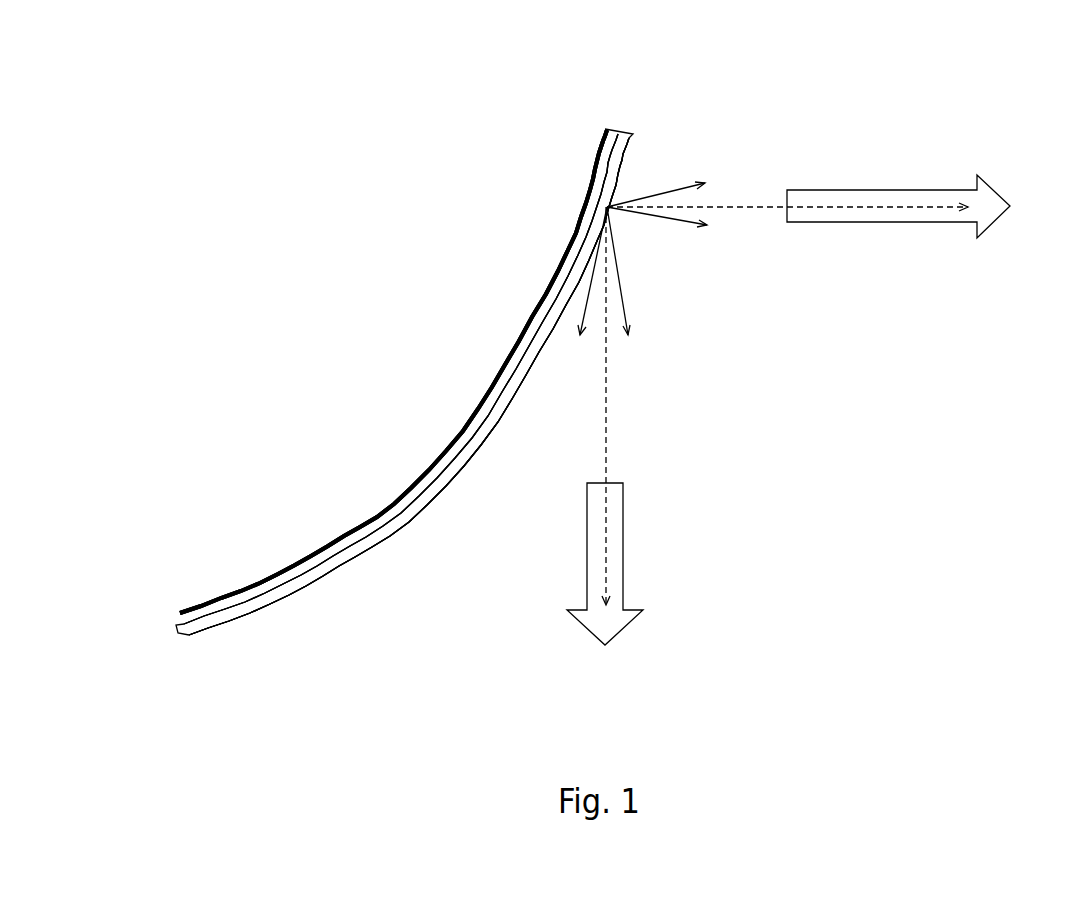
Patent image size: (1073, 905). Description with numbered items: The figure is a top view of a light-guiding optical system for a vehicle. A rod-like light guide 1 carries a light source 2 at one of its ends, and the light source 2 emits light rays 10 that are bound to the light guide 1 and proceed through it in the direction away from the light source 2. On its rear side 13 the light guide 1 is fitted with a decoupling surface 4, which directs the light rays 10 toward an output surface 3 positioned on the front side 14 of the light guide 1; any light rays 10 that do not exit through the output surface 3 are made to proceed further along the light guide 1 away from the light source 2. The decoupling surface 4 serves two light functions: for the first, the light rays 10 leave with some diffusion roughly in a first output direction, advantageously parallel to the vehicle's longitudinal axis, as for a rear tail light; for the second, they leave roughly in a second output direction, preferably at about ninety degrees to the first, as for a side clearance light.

The light guide 1 is at (512, 340).
The light source 2 is at (625, 127).
The output surface 3 is at (495, 437).
The decoupling surface 4 is at (437, 457).
The light rays 10 is at (603, 152).
The rear side 13 is at (460, 413).
The front side 14 is at (382, 553).